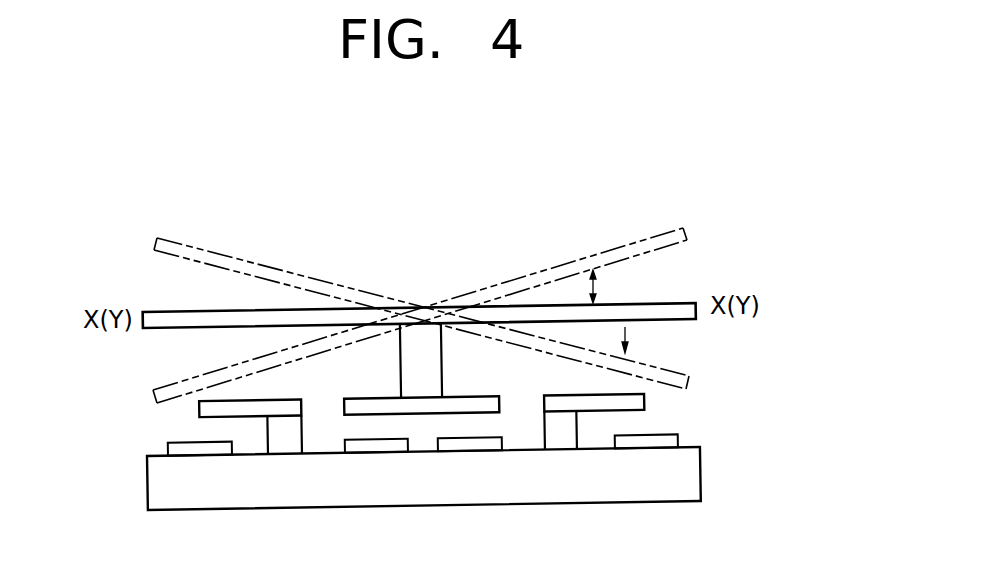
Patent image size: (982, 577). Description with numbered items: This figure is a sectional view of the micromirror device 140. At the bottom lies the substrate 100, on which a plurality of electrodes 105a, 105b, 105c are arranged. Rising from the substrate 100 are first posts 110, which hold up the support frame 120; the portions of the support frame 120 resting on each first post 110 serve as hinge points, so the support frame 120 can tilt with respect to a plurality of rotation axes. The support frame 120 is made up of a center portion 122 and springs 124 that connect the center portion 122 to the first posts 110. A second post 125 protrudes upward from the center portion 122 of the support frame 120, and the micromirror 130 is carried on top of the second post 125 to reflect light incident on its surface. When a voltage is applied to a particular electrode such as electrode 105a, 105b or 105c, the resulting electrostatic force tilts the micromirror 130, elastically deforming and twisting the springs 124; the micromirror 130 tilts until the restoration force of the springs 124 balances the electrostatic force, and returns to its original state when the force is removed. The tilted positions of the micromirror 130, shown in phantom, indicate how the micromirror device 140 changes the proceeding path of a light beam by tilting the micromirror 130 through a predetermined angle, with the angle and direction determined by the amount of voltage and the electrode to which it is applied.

The substrate 100 is at (648, 493).
The electrode 105a is at (163, 443).
The electrode 105b is at (375, 448).
The electrode 105c is at (680, 441).
The first post 110 is at (287, 448).
The support frame 120 is at (541, 366).
The center portion 122 is at (500, 401).
The spring 124 is at (647, 402).
The second post 125 is at (402, 386).
The micromirror 130 is at (672, 303).
The micromirror device 140 is at (596, 214).